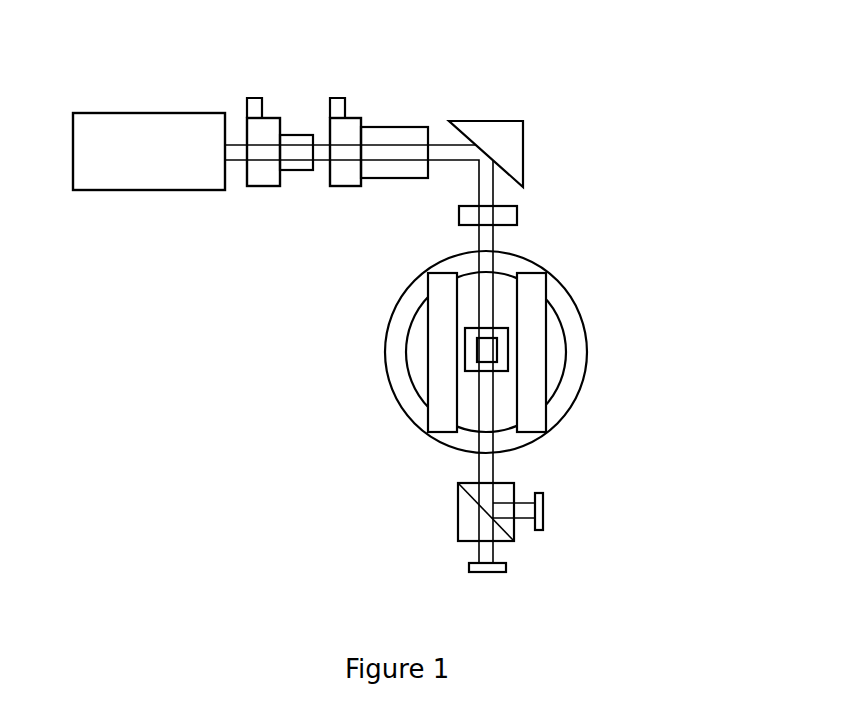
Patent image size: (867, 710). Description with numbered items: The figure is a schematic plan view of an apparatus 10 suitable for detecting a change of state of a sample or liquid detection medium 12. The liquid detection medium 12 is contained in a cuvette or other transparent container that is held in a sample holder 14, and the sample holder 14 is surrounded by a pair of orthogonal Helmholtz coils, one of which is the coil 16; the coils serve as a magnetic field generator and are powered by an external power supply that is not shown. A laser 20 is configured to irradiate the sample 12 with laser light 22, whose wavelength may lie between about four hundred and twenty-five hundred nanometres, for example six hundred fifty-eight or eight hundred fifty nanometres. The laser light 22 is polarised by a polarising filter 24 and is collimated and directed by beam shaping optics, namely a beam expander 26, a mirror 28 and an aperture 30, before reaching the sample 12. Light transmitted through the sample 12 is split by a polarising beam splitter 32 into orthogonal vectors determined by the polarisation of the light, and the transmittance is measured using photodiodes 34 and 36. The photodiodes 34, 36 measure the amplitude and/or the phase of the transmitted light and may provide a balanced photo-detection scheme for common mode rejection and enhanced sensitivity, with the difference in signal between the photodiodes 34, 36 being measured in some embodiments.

The apparatus 10 is at (697, 183).
The sample or liquid detection medium 12 is at (478, 350).
The sample holder 14 is at (463, 337).
The Helmholtz coil 16 is at (587, 353).
The laser 20 is at (73, 113).
The laser light 22 is at (236, 160).
The polarising filter 24 is at (269, 120).
The beam expander 26 is at (353, 120).
The mirror 28 is at (523, 121).
The aperture 30 is at (517, 214).
The polarising beam splitter 32 is at (458, 510).
The photodiode 34 is at (543, 510).
The photodiode 36 is at (488, 572).